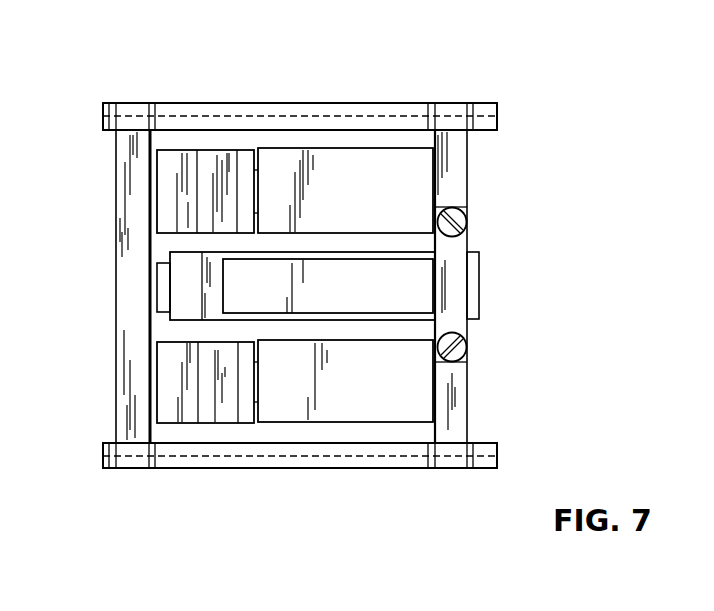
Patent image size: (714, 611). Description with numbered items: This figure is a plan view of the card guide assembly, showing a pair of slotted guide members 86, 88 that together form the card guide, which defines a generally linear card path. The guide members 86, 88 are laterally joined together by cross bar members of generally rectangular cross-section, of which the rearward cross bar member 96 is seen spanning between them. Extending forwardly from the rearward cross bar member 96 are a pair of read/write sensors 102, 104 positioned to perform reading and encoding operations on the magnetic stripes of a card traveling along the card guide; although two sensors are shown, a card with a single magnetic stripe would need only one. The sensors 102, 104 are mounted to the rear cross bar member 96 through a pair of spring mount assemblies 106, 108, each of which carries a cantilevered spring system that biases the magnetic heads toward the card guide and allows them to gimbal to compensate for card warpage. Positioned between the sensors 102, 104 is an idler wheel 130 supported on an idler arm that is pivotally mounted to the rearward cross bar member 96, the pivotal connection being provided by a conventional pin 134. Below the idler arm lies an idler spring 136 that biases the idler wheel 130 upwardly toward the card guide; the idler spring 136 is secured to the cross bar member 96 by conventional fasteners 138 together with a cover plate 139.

The slotted guide member 86 is at (328, 468).
The slotted guide member 88 is at (312, 103).
The rearward cross bar member 96 is at (460, 160).
The read/write sensor 102 is at (168, 187).
The read/write sensor 104 is at (168, 383).
The spring mount assembly 106 is at (384, 202).
The spring mount assembly 108 is at (389, 392).
The idler wheel 130 is at (157, 272).
The pin 134 is at (187, 290).
The idler spring 136 is at (384, 296).
The fasteners 138 is at (463, 216).
The cover plate 139 is at (460, 282).